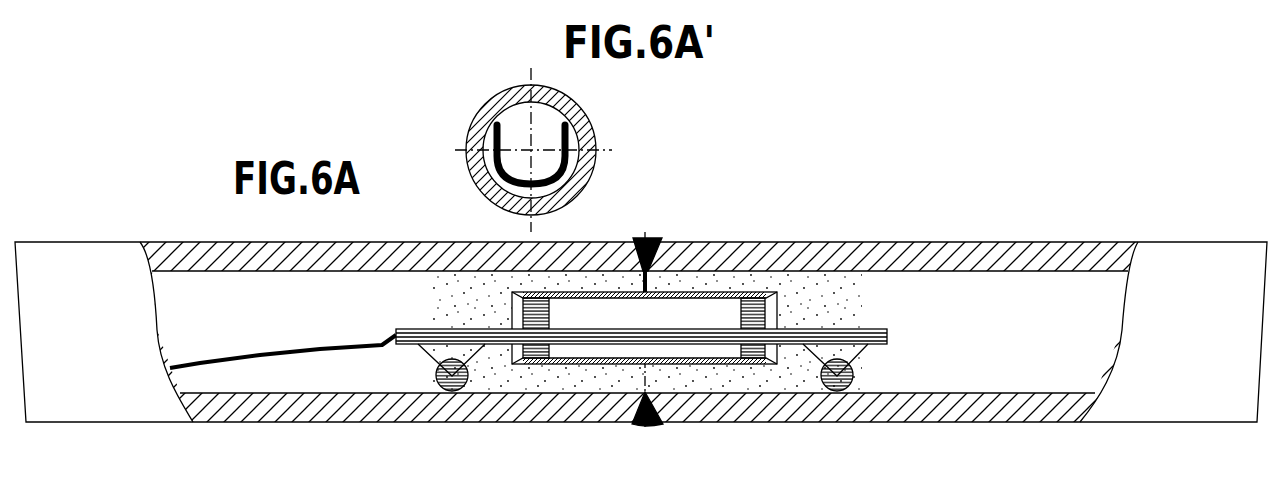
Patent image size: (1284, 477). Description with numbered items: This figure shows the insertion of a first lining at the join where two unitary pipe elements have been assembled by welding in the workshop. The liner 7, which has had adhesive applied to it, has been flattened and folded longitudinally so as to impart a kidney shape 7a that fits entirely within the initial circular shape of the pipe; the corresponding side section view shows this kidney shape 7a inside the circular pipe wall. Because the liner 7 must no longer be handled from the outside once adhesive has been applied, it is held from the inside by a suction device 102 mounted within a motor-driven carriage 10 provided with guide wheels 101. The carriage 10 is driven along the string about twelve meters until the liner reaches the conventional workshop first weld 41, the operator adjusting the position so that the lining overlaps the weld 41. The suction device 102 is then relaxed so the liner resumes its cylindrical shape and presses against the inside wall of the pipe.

In FIG. 6A', the kidney shape 7a is at (553, 118).
In FIG. 6A, the workshop first weld 41 is at (651, 237).
In FIG. 6A, the liner 7 is at (705, 292).
In FIG. 6A, the motor-driven carriage 10 is at (700, 345).
In FIG. 6A, the guide wheels 101 is at (452, 391).
In FIG. 6A, the suction device 102 is at (537, 348).